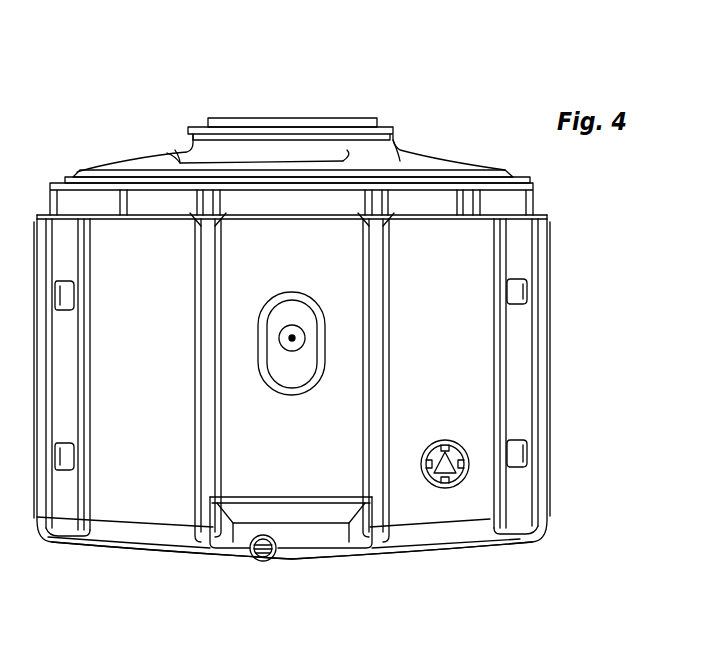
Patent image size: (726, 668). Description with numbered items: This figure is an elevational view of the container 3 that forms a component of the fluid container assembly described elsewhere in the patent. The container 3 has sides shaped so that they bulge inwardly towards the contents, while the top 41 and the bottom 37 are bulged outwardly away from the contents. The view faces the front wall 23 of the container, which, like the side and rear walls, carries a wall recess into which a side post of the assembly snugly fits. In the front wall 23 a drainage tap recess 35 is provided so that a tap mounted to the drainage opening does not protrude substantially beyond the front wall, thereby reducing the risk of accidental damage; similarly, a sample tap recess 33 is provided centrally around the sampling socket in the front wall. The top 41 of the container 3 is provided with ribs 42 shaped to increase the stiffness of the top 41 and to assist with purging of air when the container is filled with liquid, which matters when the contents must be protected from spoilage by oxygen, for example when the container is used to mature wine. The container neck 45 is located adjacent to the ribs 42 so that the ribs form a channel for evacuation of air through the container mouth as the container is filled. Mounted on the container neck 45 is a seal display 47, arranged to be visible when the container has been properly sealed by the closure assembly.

The container 3 is at (547, 397).
The front wall 23 is at (443, 505).
The sample tap recess 33 is at (297, 312).
The drainage tap recess 35 is at (313, 532).
The bottom 37 is at (160, 556).
The top 41 is at (100, 168).
The ribs 42 is at (177, 150).
The container neck 45 is at (395, 147).
The seal display 47 is at (296, 118).